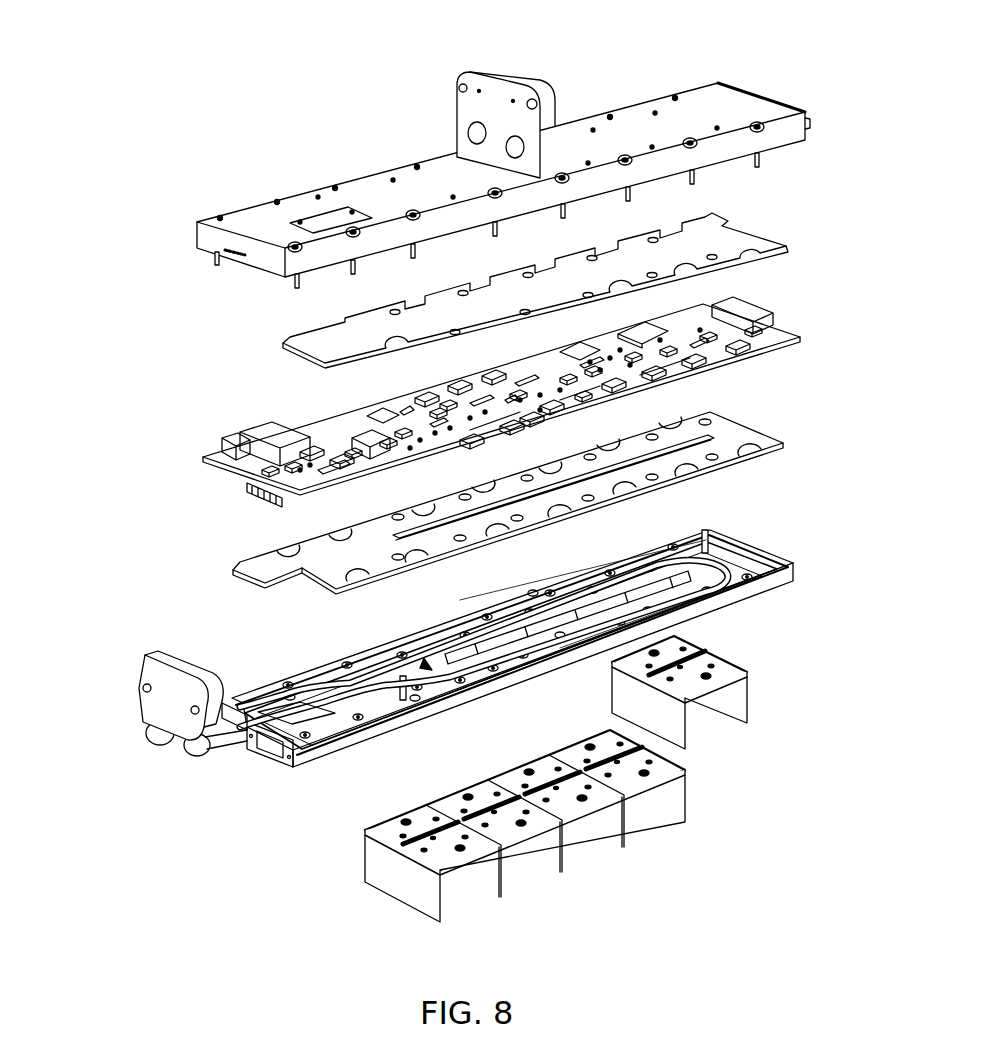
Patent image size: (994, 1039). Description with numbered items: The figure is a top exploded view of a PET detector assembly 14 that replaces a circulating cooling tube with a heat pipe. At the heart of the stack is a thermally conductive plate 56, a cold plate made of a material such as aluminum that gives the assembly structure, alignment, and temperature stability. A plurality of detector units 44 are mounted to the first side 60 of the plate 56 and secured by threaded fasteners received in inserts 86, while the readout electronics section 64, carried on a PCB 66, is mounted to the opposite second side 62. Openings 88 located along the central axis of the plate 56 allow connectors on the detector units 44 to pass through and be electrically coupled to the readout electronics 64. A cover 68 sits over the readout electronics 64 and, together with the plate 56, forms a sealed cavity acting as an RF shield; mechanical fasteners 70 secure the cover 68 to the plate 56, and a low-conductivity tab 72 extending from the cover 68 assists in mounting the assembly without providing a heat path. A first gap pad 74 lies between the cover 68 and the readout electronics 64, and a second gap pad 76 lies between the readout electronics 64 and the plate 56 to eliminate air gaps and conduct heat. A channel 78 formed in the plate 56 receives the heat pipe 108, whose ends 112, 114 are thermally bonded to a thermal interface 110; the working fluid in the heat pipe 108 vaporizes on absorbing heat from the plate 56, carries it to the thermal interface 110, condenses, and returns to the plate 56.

The PET detector assembly 14 is at (829, 130).
The detector units 44 is at (722, 738).
The thermally conductive plate 56 is at (783, 570).
The first side 60 is at (722, 608).
The second side 62 is at (740, 557).
The readout electronics section 64 is at (780, 333).
The PCB 66 is at (777, 350).
The cover 68 is at (750, 103).
The mechanical fasteners 70 is at (763, 159).
The tab 72 is at (513, 82).
The first gap pad 74 is at (733, 240).
The second gap pad 76 is at (763, 442).
The channel 78 is at (340, 702).
The inserts 86 is at (592, 590).
The openings 88 is at (427, 663).
The heat pipe 108 is at (225, 747).
The thermal interface 110 is at (160, 702).
The first end of heat pipe 112 is at (157, 742).
The second end of heat pipe 114 is at (187, 757).